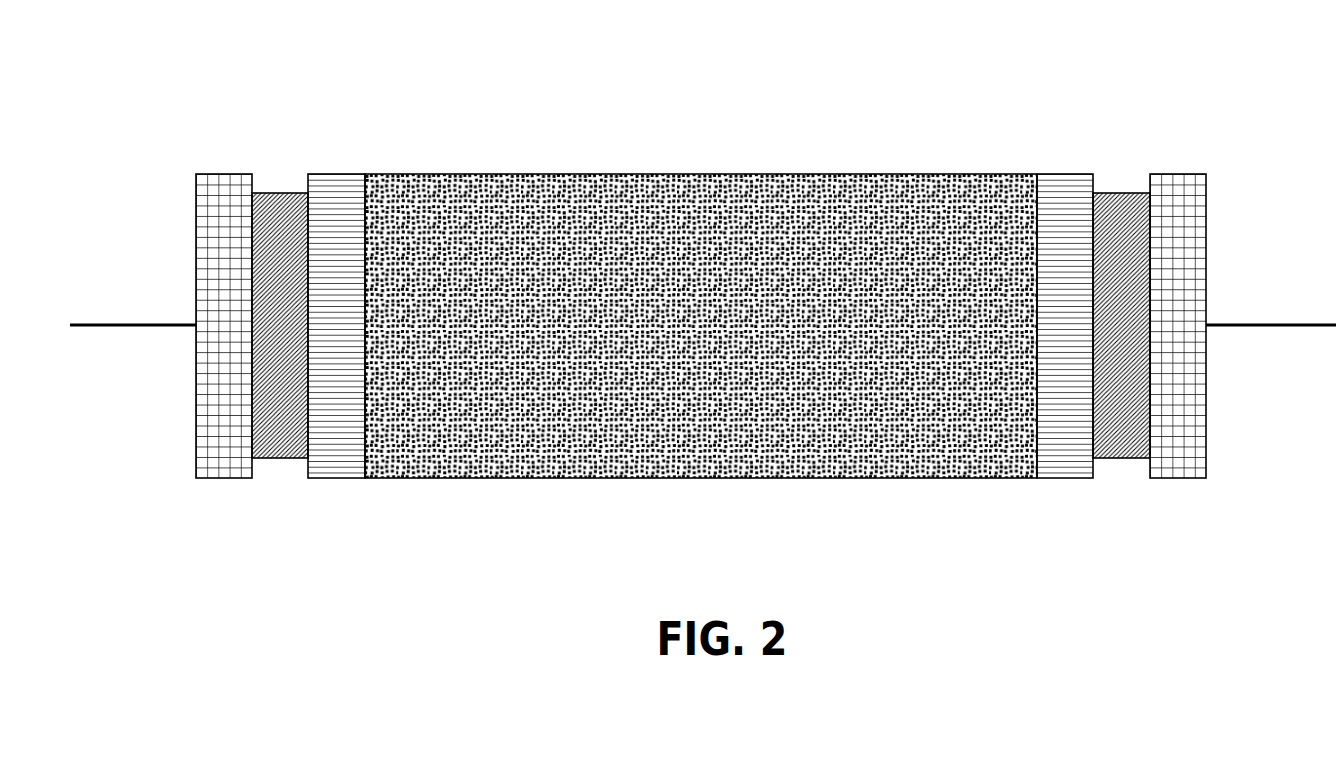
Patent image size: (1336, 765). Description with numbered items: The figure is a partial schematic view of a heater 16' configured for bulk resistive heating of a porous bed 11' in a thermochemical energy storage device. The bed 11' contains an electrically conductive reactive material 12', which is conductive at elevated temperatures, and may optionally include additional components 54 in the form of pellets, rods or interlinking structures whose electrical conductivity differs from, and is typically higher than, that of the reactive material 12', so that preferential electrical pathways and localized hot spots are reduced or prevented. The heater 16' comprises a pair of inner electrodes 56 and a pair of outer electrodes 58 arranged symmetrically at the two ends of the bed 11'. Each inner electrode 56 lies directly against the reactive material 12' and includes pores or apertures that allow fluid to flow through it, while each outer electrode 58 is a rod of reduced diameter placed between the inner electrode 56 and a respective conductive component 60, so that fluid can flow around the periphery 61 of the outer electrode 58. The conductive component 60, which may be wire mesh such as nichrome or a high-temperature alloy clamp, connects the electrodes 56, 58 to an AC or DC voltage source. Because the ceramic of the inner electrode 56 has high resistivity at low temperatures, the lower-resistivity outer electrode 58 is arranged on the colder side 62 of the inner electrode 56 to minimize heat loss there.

The porous bed 11' is at (701, 269).
The reactive material 12' is at (701, 269).
The heater 16' is at (711, 339).
The additional components 54 is at (768, 207).
The inner electrode 56 is at (341, 450).
The outer electrode 58 is at (275, 437).
The conductive component 60 is at (213, 203).
The periphery 61 is at (285, 192).
The colder side 62 is at (305, 222).